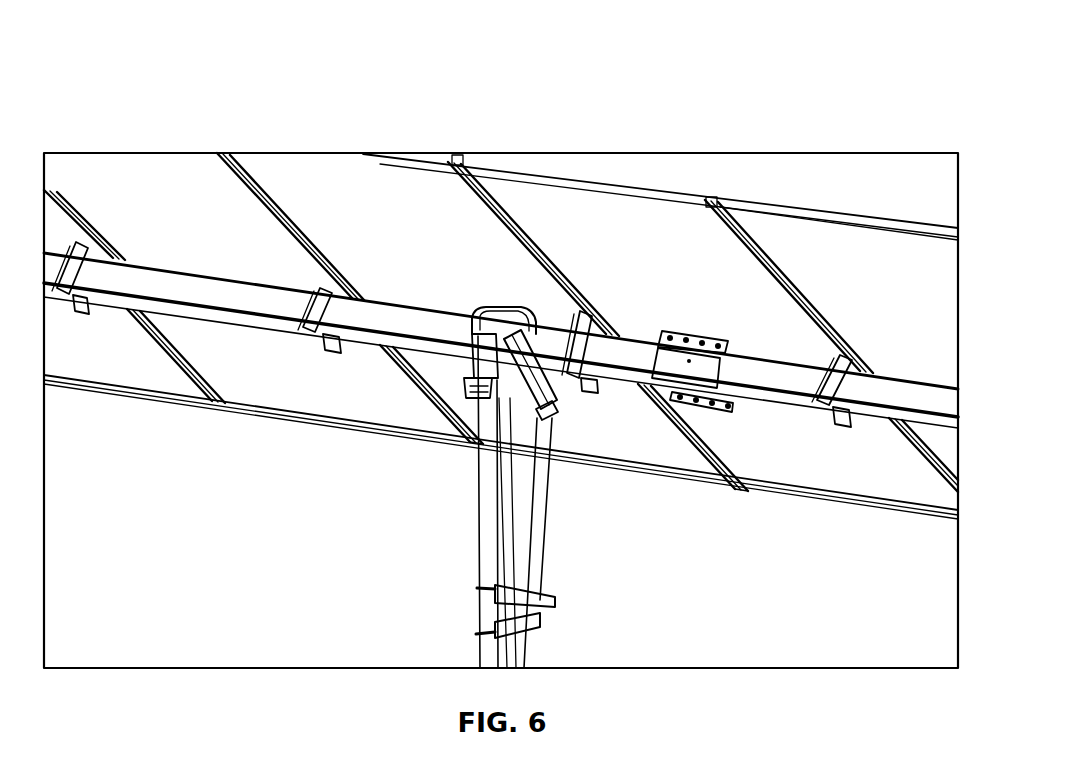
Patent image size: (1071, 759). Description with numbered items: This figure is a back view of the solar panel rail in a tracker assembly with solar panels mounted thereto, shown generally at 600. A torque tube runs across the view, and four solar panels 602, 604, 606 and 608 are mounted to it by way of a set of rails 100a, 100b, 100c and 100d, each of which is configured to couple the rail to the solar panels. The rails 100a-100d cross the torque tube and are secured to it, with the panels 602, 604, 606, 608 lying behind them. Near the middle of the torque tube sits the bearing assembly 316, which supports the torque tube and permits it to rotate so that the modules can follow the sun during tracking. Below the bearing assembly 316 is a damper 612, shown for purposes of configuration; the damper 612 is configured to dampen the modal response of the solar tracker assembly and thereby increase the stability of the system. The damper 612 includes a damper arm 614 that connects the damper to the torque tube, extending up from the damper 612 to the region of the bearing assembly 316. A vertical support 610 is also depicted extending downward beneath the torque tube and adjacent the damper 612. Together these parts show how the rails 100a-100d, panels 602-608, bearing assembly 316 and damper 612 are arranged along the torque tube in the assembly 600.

The back view of solar panel rail with solar panels mounted thereto 600 is at (840, 44).
The solar panel 602 is at (858, 247).
The solar panel 604 is at (650, 220).
The solar panel 606 is at (285, 176).
The solar panel 608 is at (157, 173).
The bearing assembly 316 is at (483, 307).
The damper arm 614 is at (528, 327).
The post 610 is at (487, 537).
The damper 612 is at (552, 562).
The rail 100a is at (840, 428).
The rail 100b is at (597, 389).
The rail 100c is at (322, 336).
The rail 100d is at (80, 314).